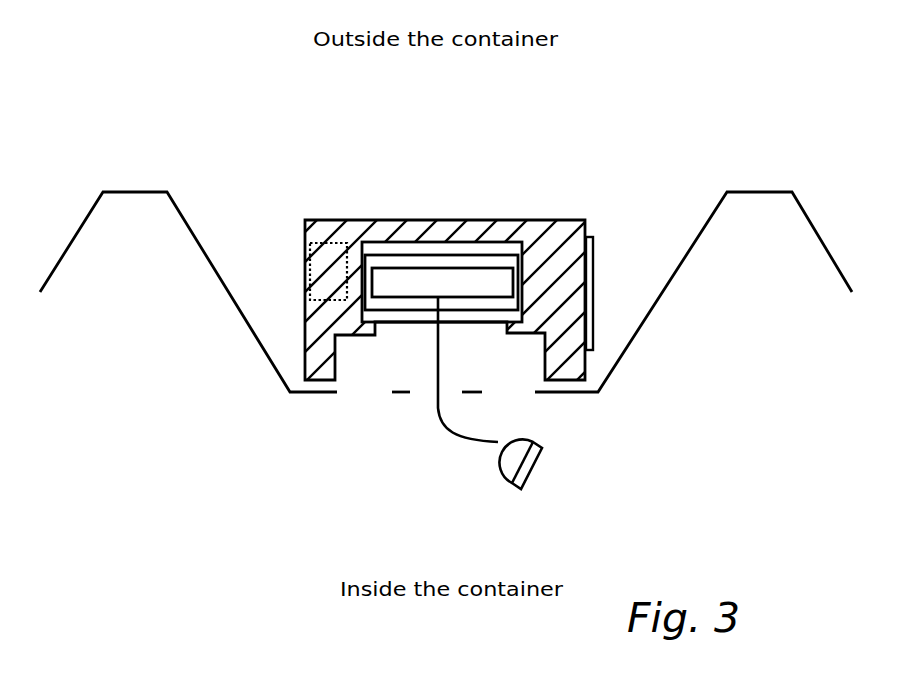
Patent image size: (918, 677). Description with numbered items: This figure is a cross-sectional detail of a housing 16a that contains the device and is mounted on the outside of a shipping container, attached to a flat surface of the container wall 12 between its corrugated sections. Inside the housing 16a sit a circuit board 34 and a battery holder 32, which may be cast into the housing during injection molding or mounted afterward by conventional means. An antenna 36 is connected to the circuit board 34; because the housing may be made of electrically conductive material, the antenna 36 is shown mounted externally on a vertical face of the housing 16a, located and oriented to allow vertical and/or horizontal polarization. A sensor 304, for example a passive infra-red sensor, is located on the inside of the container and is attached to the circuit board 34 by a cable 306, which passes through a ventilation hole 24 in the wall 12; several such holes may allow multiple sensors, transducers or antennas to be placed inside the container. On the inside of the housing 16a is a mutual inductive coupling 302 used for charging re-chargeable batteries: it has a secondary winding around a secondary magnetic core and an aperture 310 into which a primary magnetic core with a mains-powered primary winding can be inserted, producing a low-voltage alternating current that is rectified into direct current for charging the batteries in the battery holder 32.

The wall 12 is at (145, 188).
The housing 16a is at (449, 339).
The ventilation hole 24 is at (367, 393).
The battery holder 32 is at (492, 253).
The circuit board 34 is at (438, 270).
The antenna 36 is at (595, 290).
The mutual inductive coupling 302 is at (320, 233).
The sensor 304 is at (507, 467).
The cable 306 is at (438, 413).
The aperture 310 is at (318, 268).